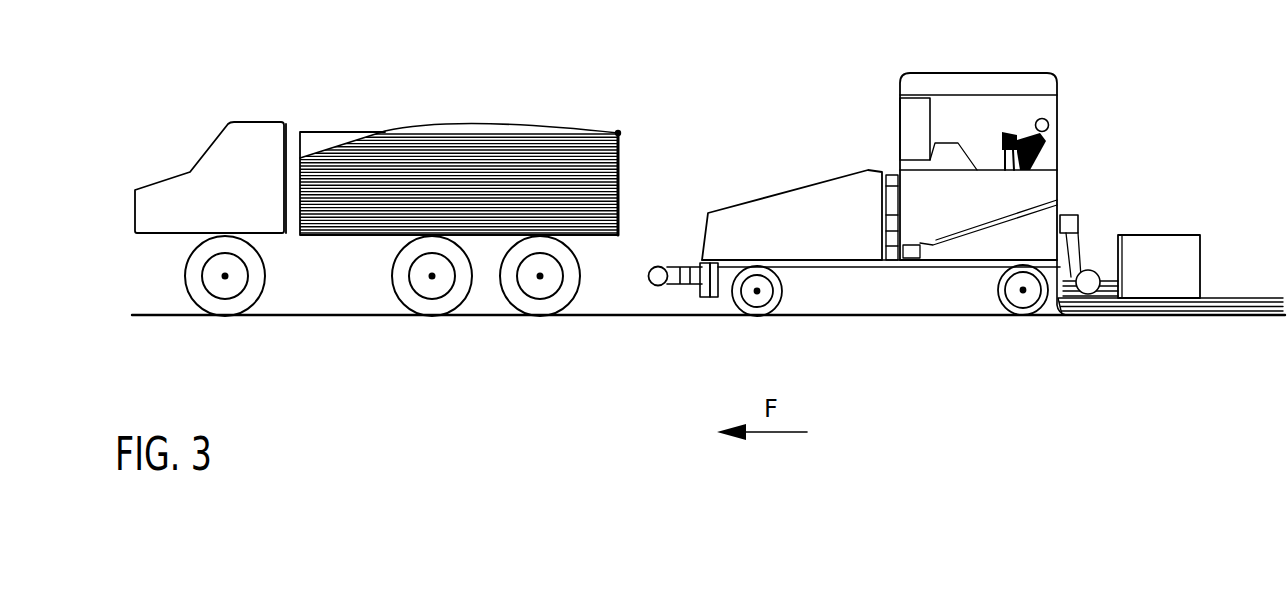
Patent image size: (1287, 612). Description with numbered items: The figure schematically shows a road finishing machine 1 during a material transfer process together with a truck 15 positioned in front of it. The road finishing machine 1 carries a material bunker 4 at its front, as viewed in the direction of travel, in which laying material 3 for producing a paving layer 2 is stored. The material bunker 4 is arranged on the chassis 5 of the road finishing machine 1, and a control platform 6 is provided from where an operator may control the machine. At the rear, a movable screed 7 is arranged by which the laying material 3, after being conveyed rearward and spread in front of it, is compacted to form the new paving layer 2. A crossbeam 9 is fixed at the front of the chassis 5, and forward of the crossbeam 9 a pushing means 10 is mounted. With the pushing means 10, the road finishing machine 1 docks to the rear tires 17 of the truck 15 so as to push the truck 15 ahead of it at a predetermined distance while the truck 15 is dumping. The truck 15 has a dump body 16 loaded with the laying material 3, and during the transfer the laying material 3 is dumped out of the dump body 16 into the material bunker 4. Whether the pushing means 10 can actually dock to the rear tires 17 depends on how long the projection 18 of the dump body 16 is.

The road finishing machine 1 is at (1099, 62).
The paving layer 2 is at (1252, 297).
The laying material 3 is at (452, 128).
The material bunker 4 is at (781, 238).
The chassis 5 is at (722, 300).
The control platform 6 is at (971, 132).
The screed 7 is at (1155, 282).
The crossbeam 9 is at (711, 300).
The pushing means 10 is at (660, 302).
The truck 15 is at (326, 100).
The dump body 16 is at (586, 133).
The rear tires 17 is at (540, 320).
The projection 18 is at (611, 250).